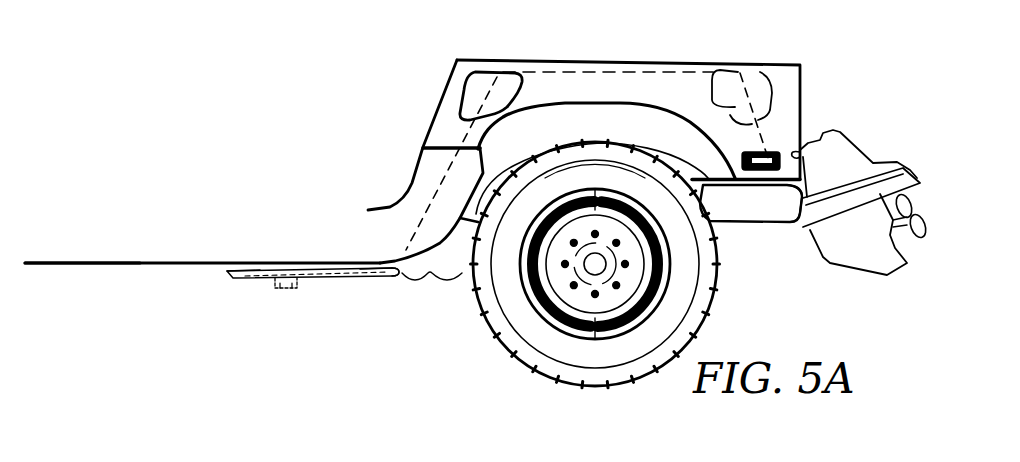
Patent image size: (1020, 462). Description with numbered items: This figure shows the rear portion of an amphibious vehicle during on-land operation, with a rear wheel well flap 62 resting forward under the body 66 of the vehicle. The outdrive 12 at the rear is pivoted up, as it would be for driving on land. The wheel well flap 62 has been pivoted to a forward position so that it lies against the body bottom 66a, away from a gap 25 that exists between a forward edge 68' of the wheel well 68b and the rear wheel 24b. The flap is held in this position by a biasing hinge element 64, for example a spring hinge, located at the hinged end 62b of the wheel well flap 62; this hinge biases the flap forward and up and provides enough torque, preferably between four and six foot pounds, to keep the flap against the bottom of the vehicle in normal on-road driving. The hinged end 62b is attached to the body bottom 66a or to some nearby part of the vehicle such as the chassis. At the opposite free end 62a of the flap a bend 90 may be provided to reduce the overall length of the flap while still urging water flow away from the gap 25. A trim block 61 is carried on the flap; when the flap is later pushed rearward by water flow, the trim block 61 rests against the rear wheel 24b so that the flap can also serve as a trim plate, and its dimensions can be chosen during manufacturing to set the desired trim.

The outdrive 12 is at (880, 106).
The rear wheel 24b is at (543, 332).
The gap 25 is at (432, 284).
The trim block 61 is at (284, 288).
The rear wheel well flap 62 is at (328, 279).
The free end 62a is at (216, 286).
The hinged end 62b is at (372, 281).
The biasing hinge element 64 is at (394, 279).
The body 66 is at (327, 105).
The body bottom 66a is at (125, 287).
The forward edge 68' is at (420, 331).
The wheel well 68b is at (574, 98).
The bend 90 is at (241, 282).